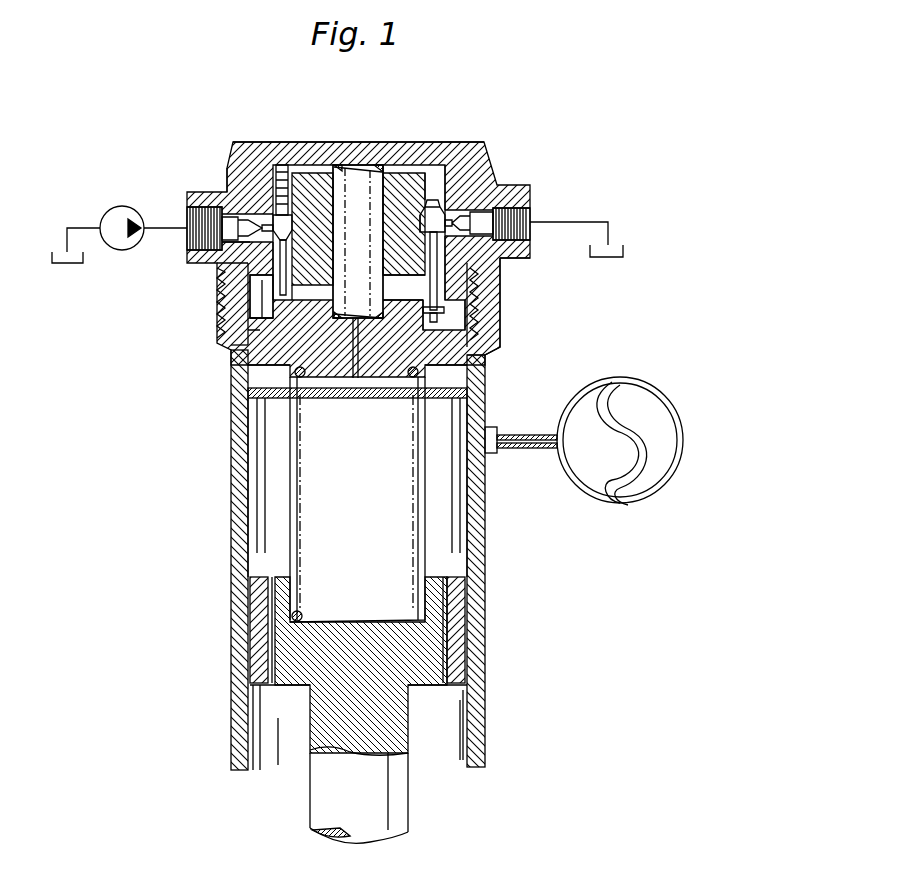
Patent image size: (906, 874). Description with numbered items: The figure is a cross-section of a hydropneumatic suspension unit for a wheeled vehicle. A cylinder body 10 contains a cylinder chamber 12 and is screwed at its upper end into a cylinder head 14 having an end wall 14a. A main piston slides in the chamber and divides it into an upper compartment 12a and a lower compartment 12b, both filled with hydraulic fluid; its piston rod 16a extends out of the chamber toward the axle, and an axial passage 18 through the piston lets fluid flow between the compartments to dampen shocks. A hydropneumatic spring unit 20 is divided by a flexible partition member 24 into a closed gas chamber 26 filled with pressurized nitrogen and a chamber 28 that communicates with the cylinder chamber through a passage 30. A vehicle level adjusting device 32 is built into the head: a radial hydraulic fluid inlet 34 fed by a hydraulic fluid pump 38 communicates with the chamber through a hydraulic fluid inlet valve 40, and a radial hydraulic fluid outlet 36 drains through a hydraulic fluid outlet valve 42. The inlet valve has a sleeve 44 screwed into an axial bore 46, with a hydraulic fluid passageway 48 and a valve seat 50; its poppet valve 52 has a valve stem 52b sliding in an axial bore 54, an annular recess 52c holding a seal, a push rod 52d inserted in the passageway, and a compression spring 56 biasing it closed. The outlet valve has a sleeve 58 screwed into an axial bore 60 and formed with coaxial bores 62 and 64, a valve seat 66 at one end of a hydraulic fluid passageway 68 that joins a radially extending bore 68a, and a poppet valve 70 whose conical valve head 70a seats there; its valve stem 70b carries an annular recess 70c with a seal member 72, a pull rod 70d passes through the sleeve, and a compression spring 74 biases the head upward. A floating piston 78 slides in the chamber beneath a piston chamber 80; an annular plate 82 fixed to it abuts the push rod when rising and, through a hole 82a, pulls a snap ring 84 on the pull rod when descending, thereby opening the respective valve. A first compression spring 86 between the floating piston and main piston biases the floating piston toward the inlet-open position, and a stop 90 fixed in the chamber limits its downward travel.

The cylinder body 10 is at (500, 425).
The cylinder chamber 12 is at (470, 548).
The upper compartment 12a is at (375, 572).
The lower compartment 12b is at (260, 807).
The cylinder head 14 is at (463, 140).
The end wall 14a is at (455, 140).
The piston rod 16a is at (425, 664).
The passage 18 is at (258, 636).
The hydropneumatic spring unit 20 is at (627, 372).
The flexible partition member 24 is at (640, 400).
The chamber 26 is at (635, 480).
The chamber 28 is at (585, 470).
The passage 30 is at (520, 447).
The vehicle level adjusting device 32 is at (262, 350).
The hydraulic fluid inlet 34 is at (186, 237).
The hydraulic fluid outlet 36 is at (527, 212).
The hydraulic fluid pump 38 is at (115, 208).
The hydraulic fluid inlet valve 40 is at (245, 282).
The hydraulic fluid outlet valve 42 is at (497, 312).
The sleeve 44 is at (255, 286).
The axial bore 46 is at (248, 246).
The hydraulic fluid passageway 48 is at (250, 300).
The valve seat 50 is at (250, 255).
The poppet valve 52 is at (268, 237).
The valve stem 52b is at (275, 190).
The annular recess 52c is at (268, 205).
The push rod 52d is at (240, 318).
The axial bore 54 is at (281, 170).
The compression spring 56 is at (300, 200).
The sleeve 58 is at (480, 289).
The axial bore 60 is at (495, 233).
The axial bore 62 is at (497, 262).
The axial bore 64 is at (395, 385).
The valve seat 66 is at (455, 232).
The hydraulic fluid passageway 68 is at (446, 212).
The radially extending bore 68a is at (430, 205).
The poppet valve 70 is at (465, 235).
The conical valve head 70a is at (463, 216).
The valve stem 70b is at (426, 222).
The annular recess 70c is at (405, 290).
The pull rod 70d is at (462, 302).
The seal member 72 is at (358, 250).
The compression spring 74 is at (500, 276).
The floating piston 78 is at (258, 386).
The piston chamber 80 is at (472, 372).
The valve actuating member 82 is at (338, 378).
The hole 82a is at (445, 322).
The snap ring 84 is at (440, 325).
The first compression spring 86 is at (315, 514).
The stop 90 is at (262, 415).